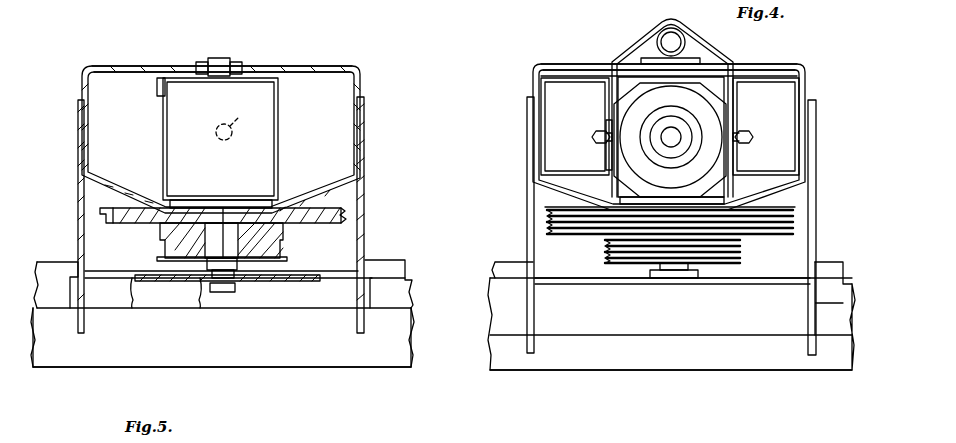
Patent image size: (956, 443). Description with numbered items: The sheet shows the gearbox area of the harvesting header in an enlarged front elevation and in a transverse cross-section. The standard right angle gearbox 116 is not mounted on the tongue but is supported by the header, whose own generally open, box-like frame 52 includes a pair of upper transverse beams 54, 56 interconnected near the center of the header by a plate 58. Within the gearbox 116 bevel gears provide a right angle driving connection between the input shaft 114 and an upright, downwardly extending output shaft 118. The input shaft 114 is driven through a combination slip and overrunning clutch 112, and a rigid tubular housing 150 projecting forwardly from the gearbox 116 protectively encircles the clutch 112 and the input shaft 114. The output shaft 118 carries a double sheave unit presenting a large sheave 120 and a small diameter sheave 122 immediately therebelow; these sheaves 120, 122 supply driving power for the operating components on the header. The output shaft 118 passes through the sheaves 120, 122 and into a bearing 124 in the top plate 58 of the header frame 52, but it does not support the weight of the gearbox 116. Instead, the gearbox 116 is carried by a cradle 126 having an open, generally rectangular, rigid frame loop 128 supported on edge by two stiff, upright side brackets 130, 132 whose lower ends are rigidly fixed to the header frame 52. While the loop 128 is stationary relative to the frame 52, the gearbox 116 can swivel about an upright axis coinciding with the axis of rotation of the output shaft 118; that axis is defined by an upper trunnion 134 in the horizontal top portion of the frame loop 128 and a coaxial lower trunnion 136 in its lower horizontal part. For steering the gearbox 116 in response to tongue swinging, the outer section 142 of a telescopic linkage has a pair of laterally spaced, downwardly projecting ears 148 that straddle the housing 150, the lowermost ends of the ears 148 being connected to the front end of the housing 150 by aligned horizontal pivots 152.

In FIG. 5, the frame 52 is at (82, 368).
In FIG. 4, the frame 52 is at (503, 347).
In FIG. 5, the upper transverse beam 54 is at (413, 302).
In FIG. 4, the upper transverse beam 54 is at (562, 328).
In FIG. 5, the upper transverse beam 56 is at (347, 362).
In FIG. 4, the upper transverse beam 56 is at (738, 362).
In FIG. 5, the plate 58 is at (305, 280).
In FIG. 4, the plate 58 is at (762, 284).
In FIG. 4, the combination slip and overrunning clutch 112 is at (637, 165).
In FIG. 5, the input shaft 114 is at (233, 128).
In FIG. 4, the input shaft 114 is at (671, 142).
In FIG. 5, the right angle gearbox 116 is at (262, 155).
In FIG. 4, the right angle gearbox 116 is at (722, 168).
In FIG. 5, the output shaft 118 is at (222, 256).
In FIG. 5, the large sheave 120 is at (356, 200).
In FIG. 4, the large sheave 120 is at (592, 235).
In FIG. 5, the small diameter sheave 122 is at (160, 242).
In FIG. 4, the small diameter sheave 122 is at (737, 249).
In FIG. 5, the bearing 124 is at (210, 283).
In FIG. 4, the bearing 124 is at (668, 284).
In FIG. 5, the cradle 126 is at (318, 63).
In FIG. 4, the cradle 126 is at (579, 65).
In FIG. 5, the frame loop 128 is at (140, 64).
In FIG. 4, the frame loop 128 is at (768, 66).
In FIG. 5, the side bracket 130 is at (78, 172).
In FIG. 4, the side bracket 130 is at (816, 130).
In FIG. 5, the side bracket 132 is at (365, 143).
In FIG. 4, the side bracket 132 is at (527, 133).
In FIG. 5, the upper trunnion 134 is at (218, 57).
In FIG. 4, the upper trunnion 134 is at (703, 56).
In FIG. 5, the lower trunnion 136 is at (215, 207).
In FIG. 4, the outer section 142 is at (648, 30).
In FIG. 4, the ears 148 is at (608, 87).
In FIG. 4, the tubular housing 150 is at (610, 167).
In FIG. 4, the pivots 152 is at (594, 137).